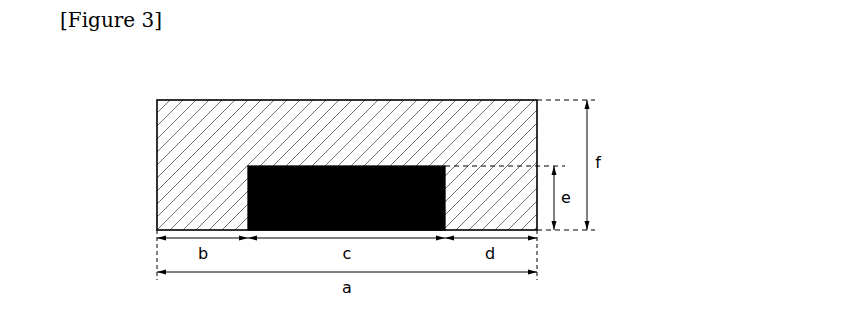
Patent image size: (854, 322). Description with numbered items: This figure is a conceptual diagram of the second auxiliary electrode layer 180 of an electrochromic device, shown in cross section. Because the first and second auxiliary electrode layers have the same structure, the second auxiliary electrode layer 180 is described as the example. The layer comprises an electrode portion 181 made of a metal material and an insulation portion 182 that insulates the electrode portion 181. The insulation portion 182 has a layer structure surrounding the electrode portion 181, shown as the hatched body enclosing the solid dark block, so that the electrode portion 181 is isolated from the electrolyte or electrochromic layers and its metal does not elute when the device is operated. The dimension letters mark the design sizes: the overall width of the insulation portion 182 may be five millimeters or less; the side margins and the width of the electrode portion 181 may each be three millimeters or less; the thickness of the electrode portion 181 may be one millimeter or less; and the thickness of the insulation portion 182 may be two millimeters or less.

The second auxiliary electrode layer 180 is at (116, 65).
The electrode portion 181 is at (248, 196).
The insulation portion 182 is at (350, 100).